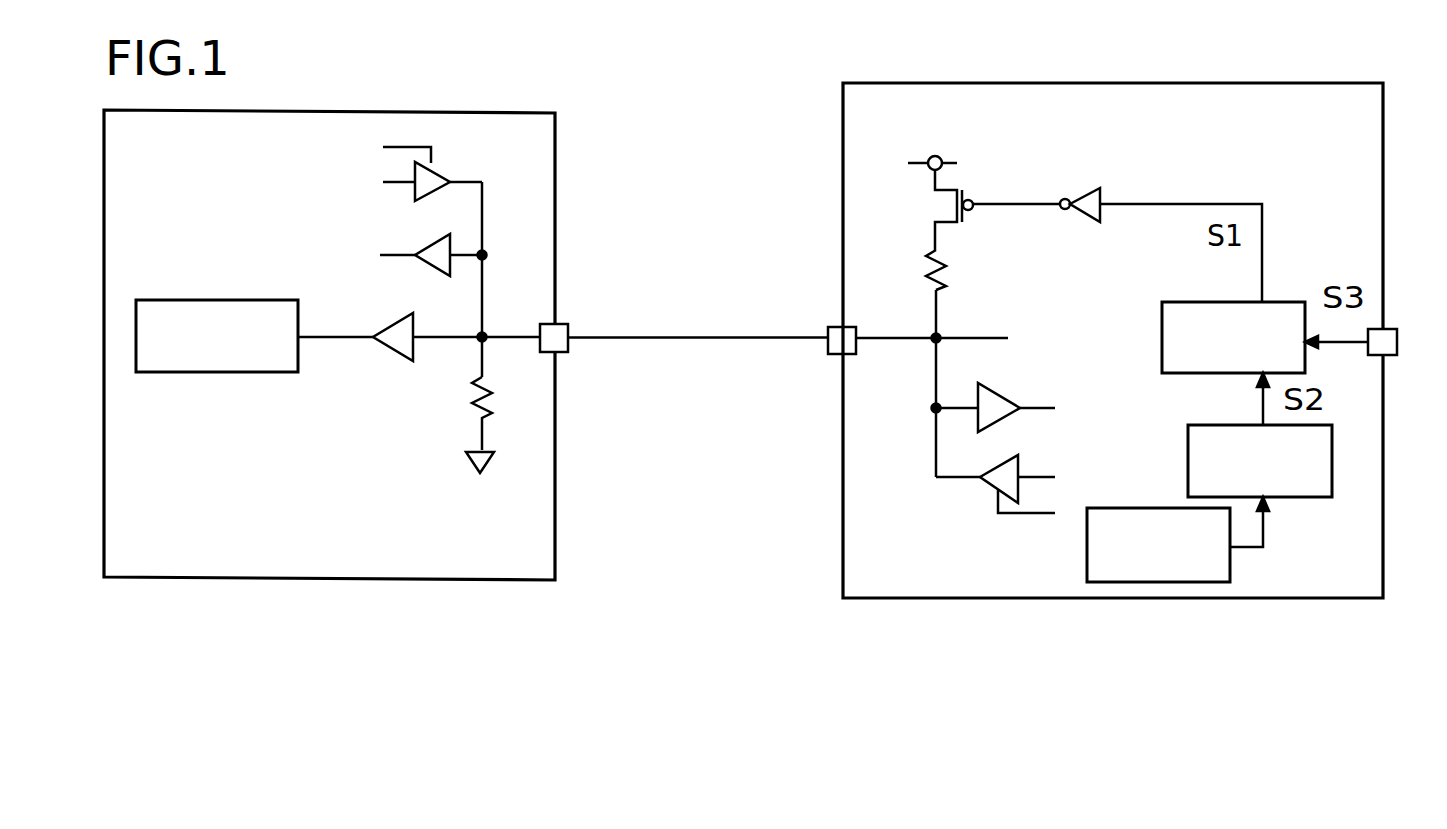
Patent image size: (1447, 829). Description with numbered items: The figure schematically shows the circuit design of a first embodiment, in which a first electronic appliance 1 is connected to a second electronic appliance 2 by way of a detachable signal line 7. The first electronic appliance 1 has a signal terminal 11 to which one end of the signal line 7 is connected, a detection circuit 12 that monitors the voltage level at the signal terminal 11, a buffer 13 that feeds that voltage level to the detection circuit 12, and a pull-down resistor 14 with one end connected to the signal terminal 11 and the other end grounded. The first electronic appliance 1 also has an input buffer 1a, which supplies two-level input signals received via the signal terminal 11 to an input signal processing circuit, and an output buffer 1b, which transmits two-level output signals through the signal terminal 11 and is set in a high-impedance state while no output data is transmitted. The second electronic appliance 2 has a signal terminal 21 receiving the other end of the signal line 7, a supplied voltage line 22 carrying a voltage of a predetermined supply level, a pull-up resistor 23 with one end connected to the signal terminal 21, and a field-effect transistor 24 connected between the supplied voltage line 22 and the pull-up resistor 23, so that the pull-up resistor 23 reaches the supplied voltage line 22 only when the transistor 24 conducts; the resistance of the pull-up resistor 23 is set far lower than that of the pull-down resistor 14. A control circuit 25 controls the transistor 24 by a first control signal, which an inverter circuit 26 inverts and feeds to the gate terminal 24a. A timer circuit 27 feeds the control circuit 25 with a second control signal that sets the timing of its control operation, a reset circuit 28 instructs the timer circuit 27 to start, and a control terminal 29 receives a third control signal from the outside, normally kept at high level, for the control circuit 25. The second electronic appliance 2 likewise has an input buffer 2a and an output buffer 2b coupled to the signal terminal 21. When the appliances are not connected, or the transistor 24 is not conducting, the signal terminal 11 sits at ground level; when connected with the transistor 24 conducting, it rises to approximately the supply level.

The first electronic appliance 1 is at (276, 580).
The input buffer 1a is at (425, 243).
The output buffer 1b is at (440, 178).
The second electronic appliance 2 is at (974, 600).
The input buffer 2a is at (998, 395).
The output buffer 2b is at (990, 488).
The signal line 7 is at (695, 342).
The signal terminal 11 is at (562, 322).
The detection circuit 12 is at (280, 300).
The buffer 13 is at (392, 352).
The pull-down resistor 14 is at (470, 402).
The signal terminal 21 is at (826, 330).
The supplied voltage line 22 is at (912, 160).
The pull-up resistor 23 is at (955, 268).
The field-effect transistor 24 is at (943, 203).
The gate terminal 24a is at (975, 209).
The control circuit 25 is at (1162, 322).
The inverter circuit 26 is at (1088, 188).
The timer circuit 27 is at (1188, 450).
The reset circuit 28 is at (1118, 508).
The control terminal 29 is at (1397, 335).